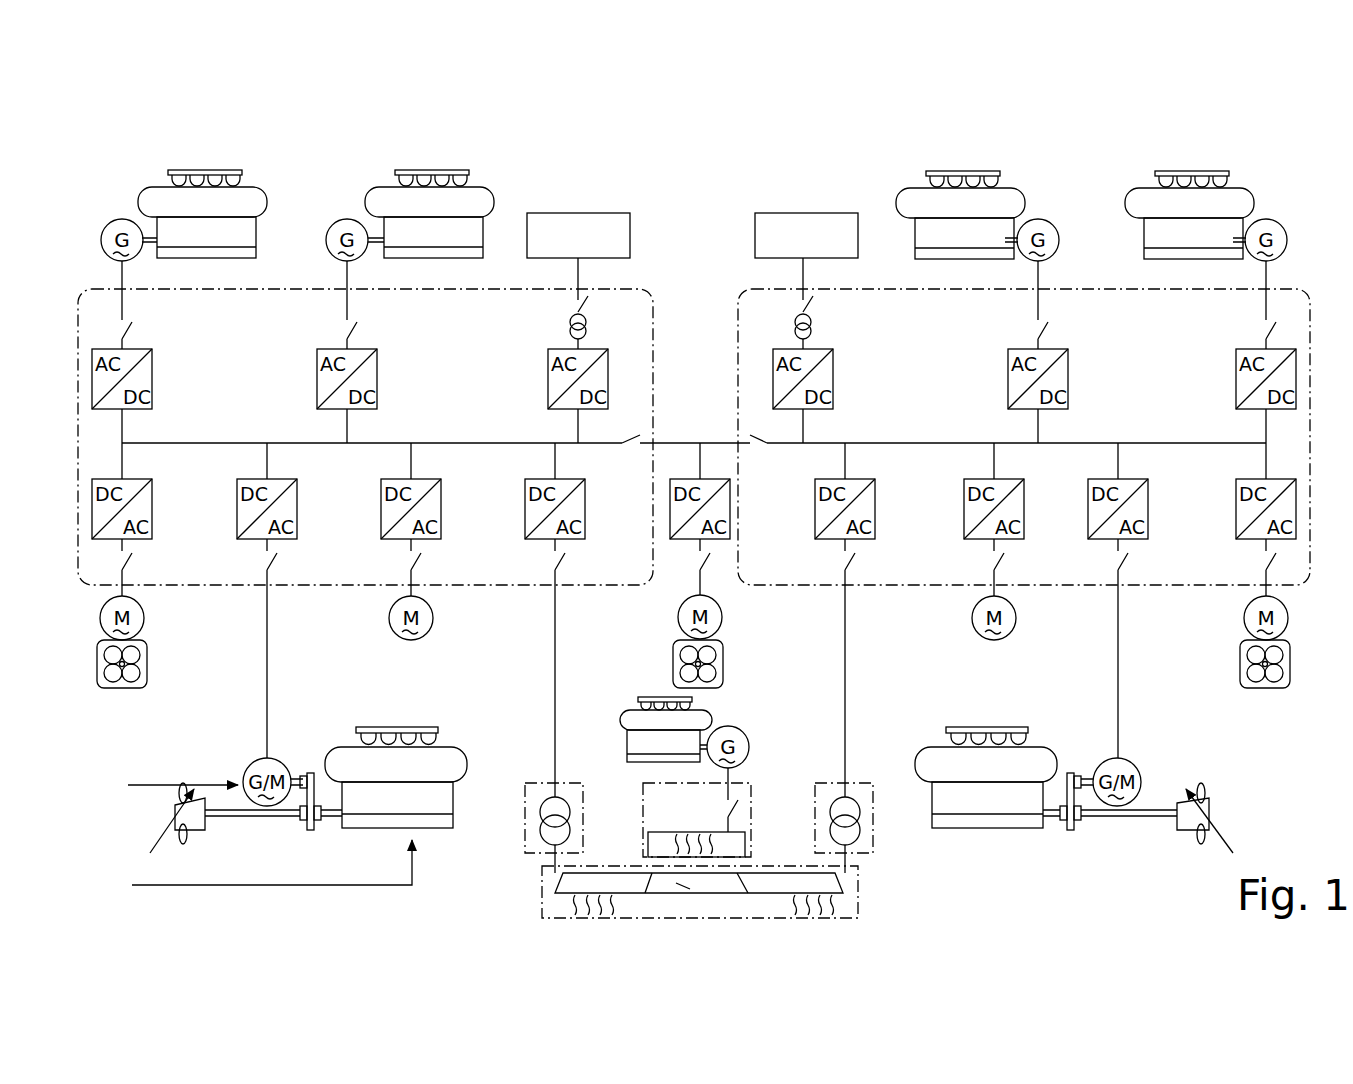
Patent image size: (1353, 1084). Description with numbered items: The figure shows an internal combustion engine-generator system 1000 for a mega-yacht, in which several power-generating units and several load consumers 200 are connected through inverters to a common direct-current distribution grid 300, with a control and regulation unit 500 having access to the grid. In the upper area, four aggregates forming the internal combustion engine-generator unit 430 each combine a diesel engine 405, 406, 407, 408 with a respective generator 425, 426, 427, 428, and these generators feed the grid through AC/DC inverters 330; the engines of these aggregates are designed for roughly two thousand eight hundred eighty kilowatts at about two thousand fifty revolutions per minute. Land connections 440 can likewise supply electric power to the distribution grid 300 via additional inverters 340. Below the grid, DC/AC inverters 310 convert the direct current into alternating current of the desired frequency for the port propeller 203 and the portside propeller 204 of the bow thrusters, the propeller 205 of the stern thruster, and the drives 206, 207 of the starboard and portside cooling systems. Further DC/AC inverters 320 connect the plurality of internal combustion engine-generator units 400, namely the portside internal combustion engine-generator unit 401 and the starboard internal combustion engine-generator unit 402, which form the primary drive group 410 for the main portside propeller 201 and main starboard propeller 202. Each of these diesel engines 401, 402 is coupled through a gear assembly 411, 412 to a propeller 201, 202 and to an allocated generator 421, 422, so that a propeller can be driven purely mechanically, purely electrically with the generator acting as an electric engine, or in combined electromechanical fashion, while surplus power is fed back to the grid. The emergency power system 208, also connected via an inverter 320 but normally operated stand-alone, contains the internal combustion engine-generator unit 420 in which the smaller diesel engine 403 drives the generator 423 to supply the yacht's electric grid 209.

The internal combustion engine-generator system 1000 is at (1215, 158).
The control and regulation unit 500 is at (1285, 290).
The internal combustion engine-generator unit 430 is at (127, 172).
The generator 425 is at (119, 228).
The generator 426 is at (345, 226).
The generator 427 is at (1035, 227).
The generator 428 is at (1263, 227).
The diesel engine 405 is at (197, 172).
The diesel engine 406 is at (430, 172).
The diesel engine 407 is at (963, 172).
The diesel engine 408 is at (1182, 172).
The land connection 440 is at (566, 220).
The AC/DC inverter 330 is at (138, 381).
The inverter 340 is at (558, 390).
The DC/AC inverter 310 is at (147, 514).
The DC/AC inverter 320 is at (288, 515).
The distribution grid 300 is at (678, 440).
The port propeller for a bow thruster 203 is at (147, 661).
The portside propeller for a bow thruster 204 is at (1242, 660).
The propeller for a stern thruster 205 is at (722, 658).
The drive for a starboard cooling system 206 is at (975, 613).
The drive for a portside cooling system 207 is at (392, 613).
The load consumers 200 is at (1212, 752).
The main portside propeller 201 is at (198, 823).
The main starboard propeller 202 is at (1178, 823).
The internal combustion engine-generator units 400 is at (381, 840).
The portside internal combustion engine-generator unit 401 is at (452, 763).
The starboard internal combustion engine-generator unit 402 is at (928, 763).
The diesel engine 403 is at (705, 718).
The internal combustion engine-generator unit 410 is at (440, 713).
The gear assembly 411 is at (310, 772).
The gear assembly 412 is at (1071, 772).
The internal combustion engine-generator unit 420 is at (620, 688).
The generator 421 is at (252, 764).
The generator 422 is at (1127, 770).
The generator 423 is at (748, 745).
The emergency power system 208 is at (860, 862).
The electric grid 209 is at (842, 903).